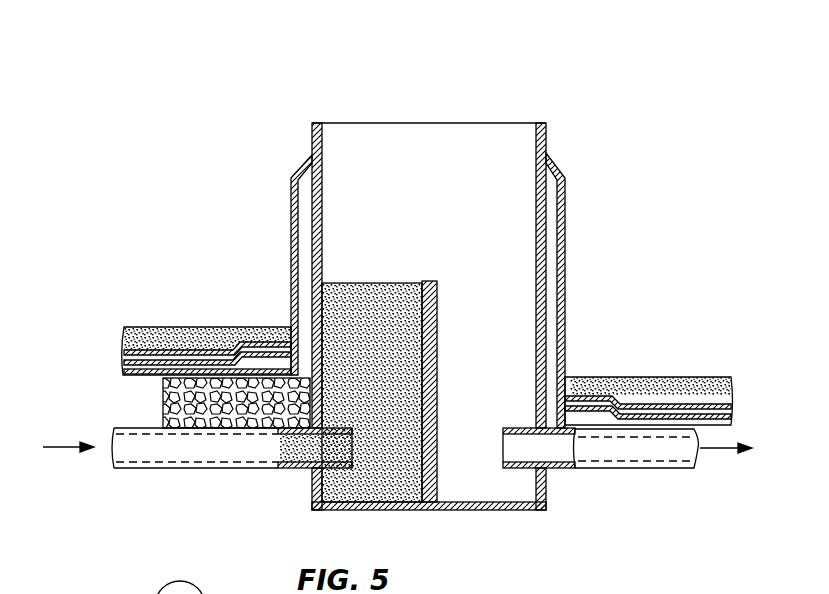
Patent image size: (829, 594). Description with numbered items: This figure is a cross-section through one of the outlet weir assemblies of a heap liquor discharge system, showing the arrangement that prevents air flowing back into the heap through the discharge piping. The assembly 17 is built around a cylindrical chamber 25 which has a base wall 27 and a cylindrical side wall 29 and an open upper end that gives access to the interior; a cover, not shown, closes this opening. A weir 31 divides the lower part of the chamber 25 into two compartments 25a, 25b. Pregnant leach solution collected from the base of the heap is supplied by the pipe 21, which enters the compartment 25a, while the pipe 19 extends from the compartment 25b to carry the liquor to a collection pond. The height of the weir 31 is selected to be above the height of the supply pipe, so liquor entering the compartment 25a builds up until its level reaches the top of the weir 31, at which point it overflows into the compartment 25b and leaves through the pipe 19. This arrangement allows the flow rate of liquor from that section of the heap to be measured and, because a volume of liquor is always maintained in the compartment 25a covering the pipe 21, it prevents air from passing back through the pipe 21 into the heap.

The filter assembly housing flange 17 is at (603, 110).
The pipe 19 is at (625, 468).
The pipe 21 is at (158, 450).
The cylindrical chamber 25 is at (502, 289).
The compartment 25a is at (372, 392).
The compartment 25b is at (486, 392).
The base wall 27 is at (473, 511).
The cylindrical side wall 29 is at (541, 211).
The weir 31 is at (438, 300).